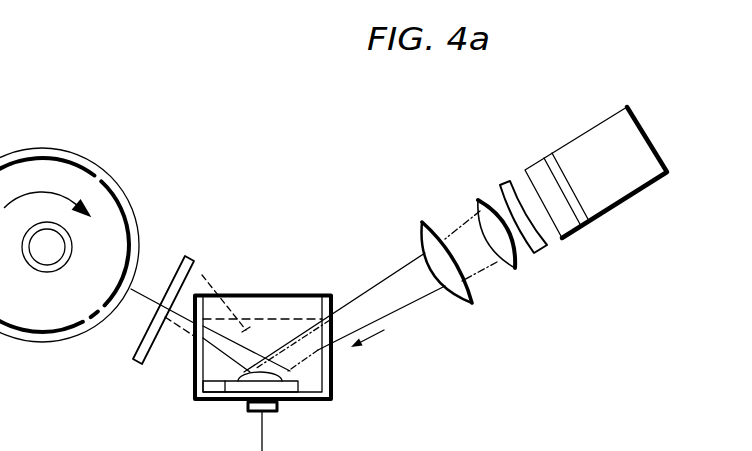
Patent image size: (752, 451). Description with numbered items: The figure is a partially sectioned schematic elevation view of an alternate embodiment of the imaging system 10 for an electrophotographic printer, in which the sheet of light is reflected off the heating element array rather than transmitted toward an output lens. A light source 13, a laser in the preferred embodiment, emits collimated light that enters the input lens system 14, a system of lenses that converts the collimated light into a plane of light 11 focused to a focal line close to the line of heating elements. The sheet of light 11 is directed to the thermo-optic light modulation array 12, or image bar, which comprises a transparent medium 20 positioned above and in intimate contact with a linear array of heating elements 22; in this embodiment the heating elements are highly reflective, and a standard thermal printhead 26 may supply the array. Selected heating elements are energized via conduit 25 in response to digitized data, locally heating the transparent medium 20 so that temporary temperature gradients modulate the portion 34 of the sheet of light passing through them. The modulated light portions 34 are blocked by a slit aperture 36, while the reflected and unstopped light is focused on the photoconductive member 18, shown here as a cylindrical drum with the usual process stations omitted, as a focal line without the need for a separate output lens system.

The imaging system 10 is at (250, 237).
The sheet of light 11 is at (397, 272).
The thermo-optic light modulation array 12 is at (422, 345).
The light source 13 is at (580, 152).
The input lens system 14 is at (456, 210).
The photoconductive member 18 is at (81, 157).
The transparent medium 20 is at (299, 318).
The heating element array 22 is at (284, 375).
The conduit 25 is at (262, 437).
The thermal printhead 26 is at (203, 384).
The modulated light portion 34 is at (205, 286).
The slit aperture 36 is at (131, 354).